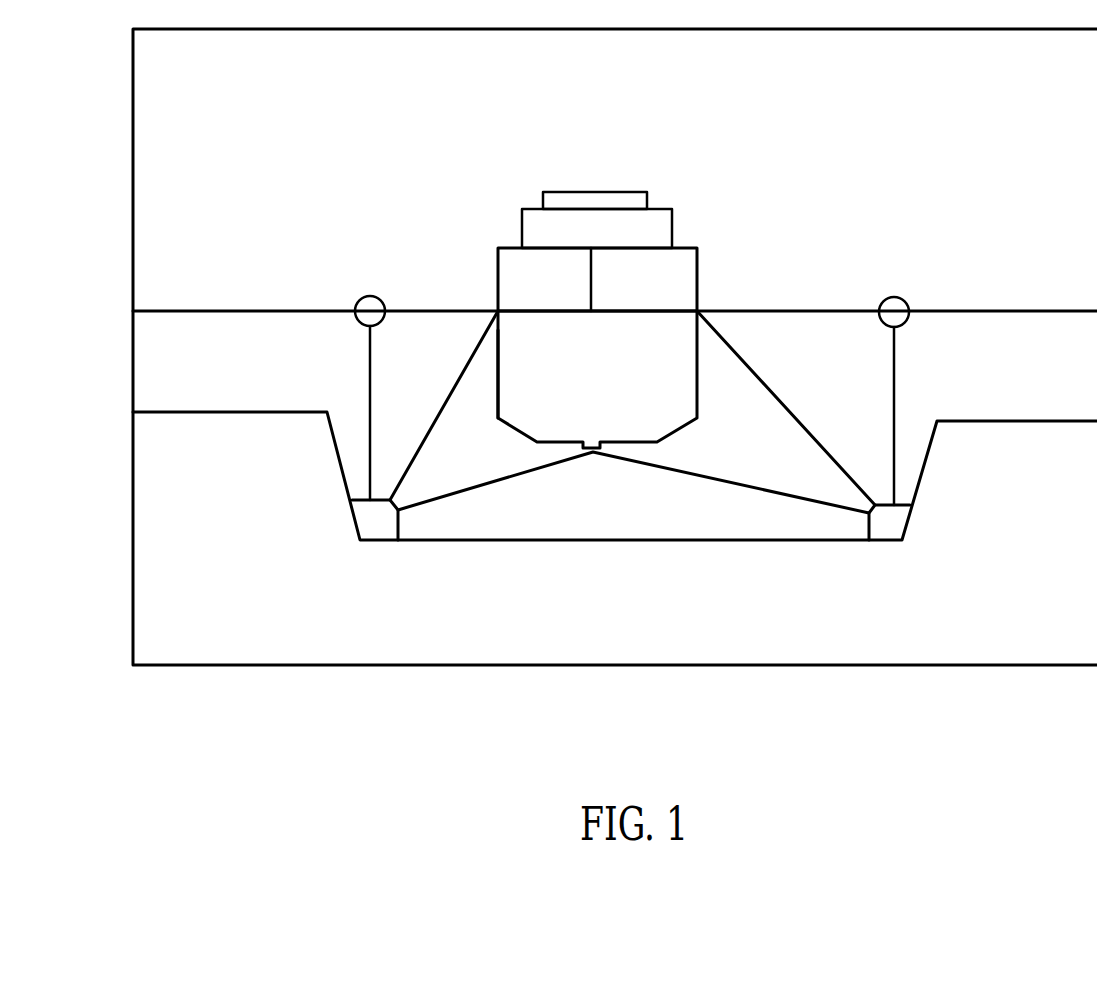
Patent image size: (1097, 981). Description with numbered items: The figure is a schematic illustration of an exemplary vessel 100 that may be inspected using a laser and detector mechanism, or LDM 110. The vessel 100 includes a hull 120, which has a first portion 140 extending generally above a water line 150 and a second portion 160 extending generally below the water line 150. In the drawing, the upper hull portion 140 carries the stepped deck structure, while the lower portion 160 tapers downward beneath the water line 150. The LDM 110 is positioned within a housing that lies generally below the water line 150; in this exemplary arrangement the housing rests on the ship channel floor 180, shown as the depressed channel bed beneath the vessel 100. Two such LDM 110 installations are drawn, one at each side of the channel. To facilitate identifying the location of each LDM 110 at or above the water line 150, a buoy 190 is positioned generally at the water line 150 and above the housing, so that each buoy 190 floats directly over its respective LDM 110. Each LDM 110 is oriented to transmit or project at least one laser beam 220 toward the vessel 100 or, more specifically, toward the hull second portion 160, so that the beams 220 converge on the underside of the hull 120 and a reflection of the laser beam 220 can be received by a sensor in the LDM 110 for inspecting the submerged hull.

The vessel 100 is at (627, 319).
The laser and detector mechanism (LDM) 110 is at (376, 557).
The hull 120 is at (703, 395).
The first portion 140 is at (697, 279).
The water line 150 is at (832, 311).
The second portion 160 is at (497, 407).
The ship channel floor 180 is at (601, 543).
The buoy 190 is at (365, 307).
The laser beam 220 is at (449, 492).